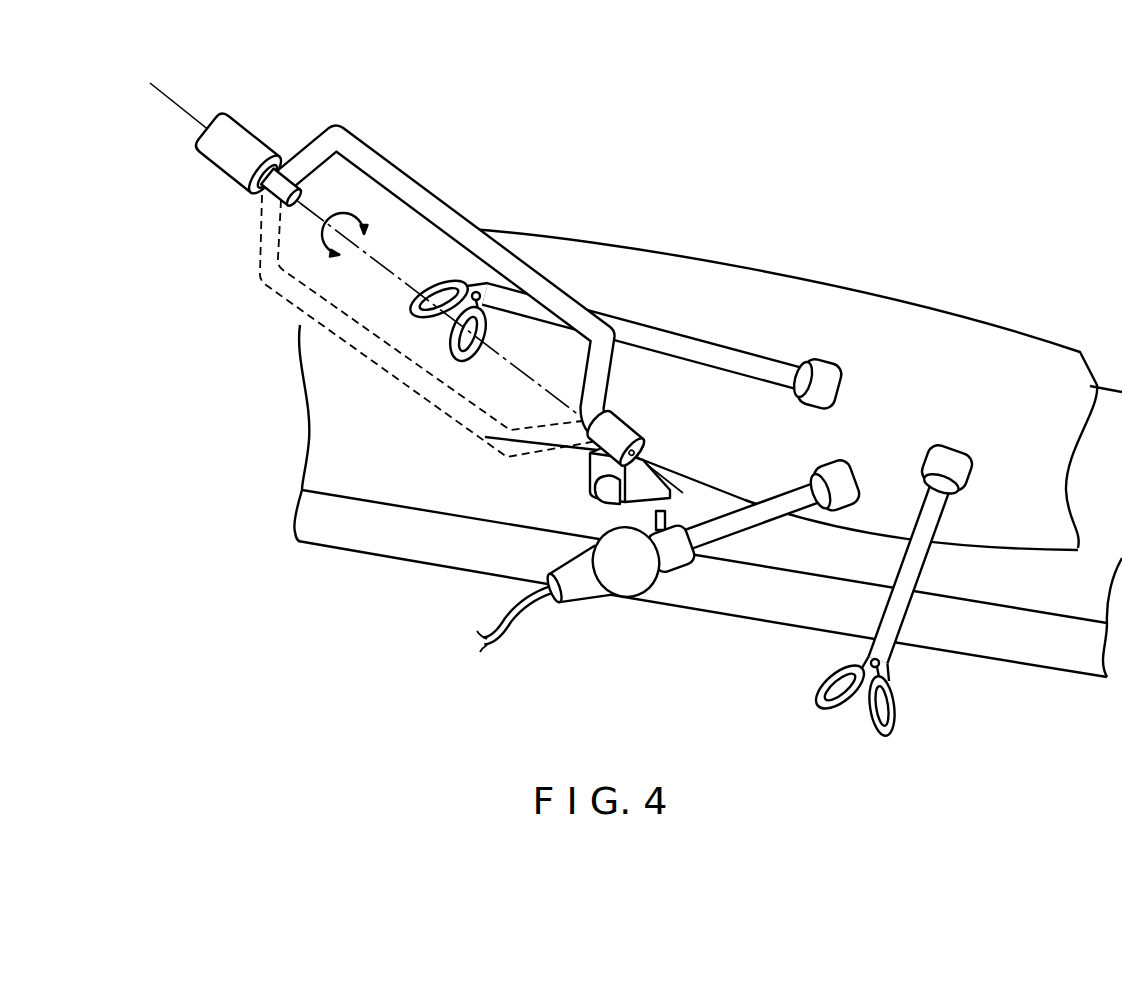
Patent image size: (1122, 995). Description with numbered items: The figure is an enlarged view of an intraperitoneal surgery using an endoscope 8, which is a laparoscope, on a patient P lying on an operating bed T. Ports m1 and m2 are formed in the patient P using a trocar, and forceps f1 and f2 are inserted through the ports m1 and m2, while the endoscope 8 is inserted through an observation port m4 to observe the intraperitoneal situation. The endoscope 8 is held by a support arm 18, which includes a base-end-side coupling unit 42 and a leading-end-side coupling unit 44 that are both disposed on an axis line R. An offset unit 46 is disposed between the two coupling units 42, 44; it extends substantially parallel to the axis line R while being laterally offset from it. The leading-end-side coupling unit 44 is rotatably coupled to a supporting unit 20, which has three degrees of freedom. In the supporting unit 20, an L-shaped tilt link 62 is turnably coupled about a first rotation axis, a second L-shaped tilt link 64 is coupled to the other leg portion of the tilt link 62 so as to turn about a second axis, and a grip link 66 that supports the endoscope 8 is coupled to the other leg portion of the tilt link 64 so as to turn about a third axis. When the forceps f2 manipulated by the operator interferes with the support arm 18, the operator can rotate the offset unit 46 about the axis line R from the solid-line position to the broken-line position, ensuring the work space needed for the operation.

The endoscope 8 is at (640, 588).
The support arm 18 is at (266, 382).
The supporting unit 20 is at (636, 467).
The base-end-side coupling unit 42 is at (212, 206).
The leading-end-side coupling unit 44 is at (634, 418).
The offset unit 46 is at (388, 168).
The tilt link 62 is at (590, 466).
The tilt link 64 is at (598, 498).
The grip link 66 is at (663, 520).
The axis line R is at (173, 101).
The patient P is at (1003, 348).
The operating bed T is at (1047, 655).
The forceps f1 is at (888, 652).
The forceps f2 is at (675, 338).
The port m1 is at (955, 455).
The port m2 is at (830, 366).
The observation port m4 is at (853, 476).